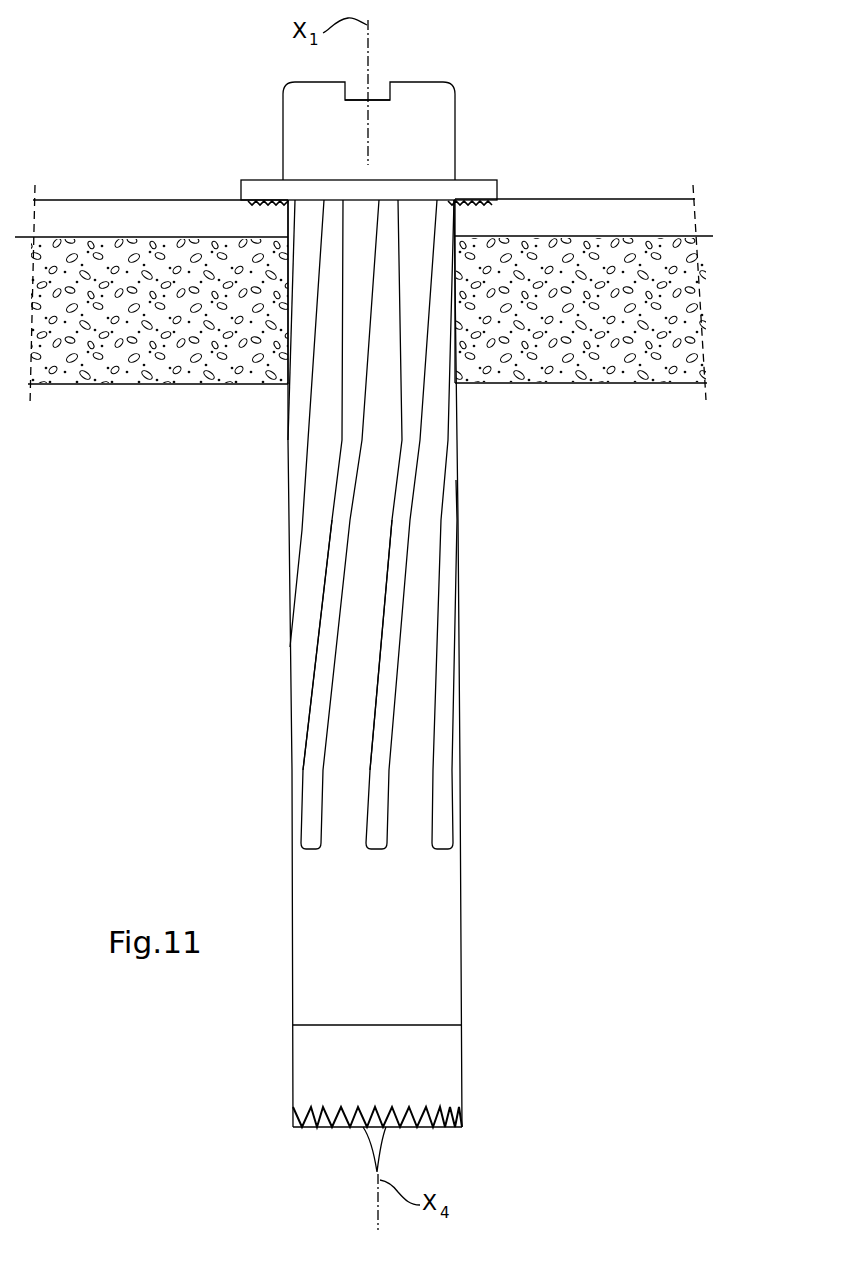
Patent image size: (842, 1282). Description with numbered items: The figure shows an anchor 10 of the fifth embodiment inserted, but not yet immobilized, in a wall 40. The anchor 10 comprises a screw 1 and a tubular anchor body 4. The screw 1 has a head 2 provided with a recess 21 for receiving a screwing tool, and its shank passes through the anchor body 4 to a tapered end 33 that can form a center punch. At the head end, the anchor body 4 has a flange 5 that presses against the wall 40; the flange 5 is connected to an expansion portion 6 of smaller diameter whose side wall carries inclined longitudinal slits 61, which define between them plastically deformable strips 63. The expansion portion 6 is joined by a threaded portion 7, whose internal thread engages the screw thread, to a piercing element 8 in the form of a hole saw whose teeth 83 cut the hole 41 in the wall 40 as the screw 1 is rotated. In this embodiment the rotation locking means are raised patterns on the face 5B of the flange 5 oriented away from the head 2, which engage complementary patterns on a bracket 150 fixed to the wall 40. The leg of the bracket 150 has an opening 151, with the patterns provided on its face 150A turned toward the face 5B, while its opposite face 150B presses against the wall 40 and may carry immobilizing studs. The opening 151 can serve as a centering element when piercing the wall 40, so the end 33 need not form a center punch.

The screw 1 is at (230, 108).
The anchor 10 is at (549, 85).
The head 2 is at (438, 120).
The recess 21 is at (381, 80).
The flange 5 is at (480, 184).
The face of the flange 5B is at (482, 209).
The opening 151 is at (291, 210).
The bracket 150 is at (657, 215).
The face of the leg 150A is at (73, 193).
The face of the leg 150B is at (66, 248).
The wall 40 is at (648, 370).
The hole 41 is at (456, 388).
The anchor body 4 is at (213, 640).
The expansion portion 6 is at (455, 742).
The longitudinal slits 61 is at (413, 550).
The strips 63 is at (365, 495).
The threaded portion 7 is at (450, 993).
The piercing element 8 is at (450, 1077).
The teeth 83 is at (333, 1130).
The end of the shank 33 is at (381, 1132).